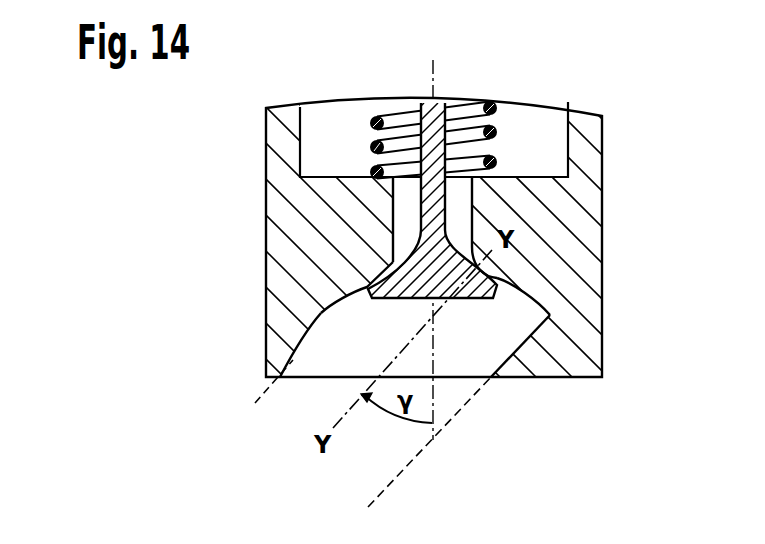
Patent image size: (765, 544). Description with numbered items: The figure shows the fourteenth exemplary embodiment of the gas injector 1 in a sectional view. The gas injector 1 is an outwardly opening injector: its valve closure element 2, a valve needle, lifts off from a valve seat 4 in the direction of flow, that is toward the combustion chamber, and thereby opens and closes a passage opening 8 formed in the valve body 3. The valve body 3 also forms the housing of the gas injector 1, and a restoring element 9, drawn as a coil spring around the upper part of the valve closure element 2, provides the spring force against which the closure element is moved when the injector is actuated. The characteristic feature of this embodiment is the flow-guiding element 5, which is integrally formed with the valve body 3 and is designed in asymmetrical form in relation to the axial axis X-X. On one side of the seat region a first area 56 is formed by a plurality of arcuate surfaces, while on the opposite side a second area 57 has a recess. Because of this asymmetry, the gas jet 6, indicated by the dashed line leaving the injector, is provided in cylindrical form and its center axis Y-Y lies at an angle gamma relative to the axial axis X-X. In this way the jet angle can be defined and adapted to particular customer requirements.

The gas injector 1 is at (328, 92).
The valve closure element 2 is at (438, 99).
The valve body 3 is at (277, 170).
The valve seat 4 is at (497, 281).
The flow-guiding element 5 is at (330, 310).
The gas jet 6 is at (255, 403).
The passage opening 8 is at (459, 188).
The restoring element 9 is at (371, 122).
The first area 56 is at (299, 353).
The second area 57 is at (550, 316).